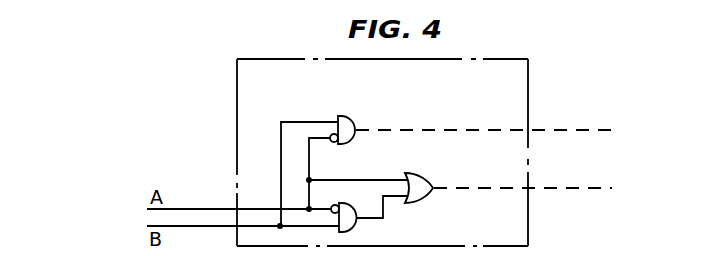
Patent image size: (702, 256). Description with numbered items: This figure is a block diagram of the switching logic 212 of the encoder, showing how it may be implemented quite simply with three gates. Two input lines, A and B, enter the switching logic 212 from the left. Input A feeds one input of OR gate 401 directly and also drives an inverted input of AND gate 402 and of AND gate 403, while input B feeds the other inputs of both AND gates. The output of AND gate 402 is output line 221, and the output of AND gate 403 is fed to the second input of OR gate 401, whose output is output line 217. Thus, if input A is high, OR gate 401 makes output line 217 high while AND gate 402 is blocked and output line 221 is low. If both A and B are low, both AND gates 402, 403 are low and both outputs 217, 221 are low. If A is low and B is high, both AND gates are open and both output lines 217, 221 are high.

The switching logic 212 is at (278, 57).
The AND gate 402 is at (352, 117).
The AND gate 403 is at (352, 229).
The OR gate 401 is at (420, 174).
The output line 221 is at (562, 129).
The output line 217 is at (552, 186).